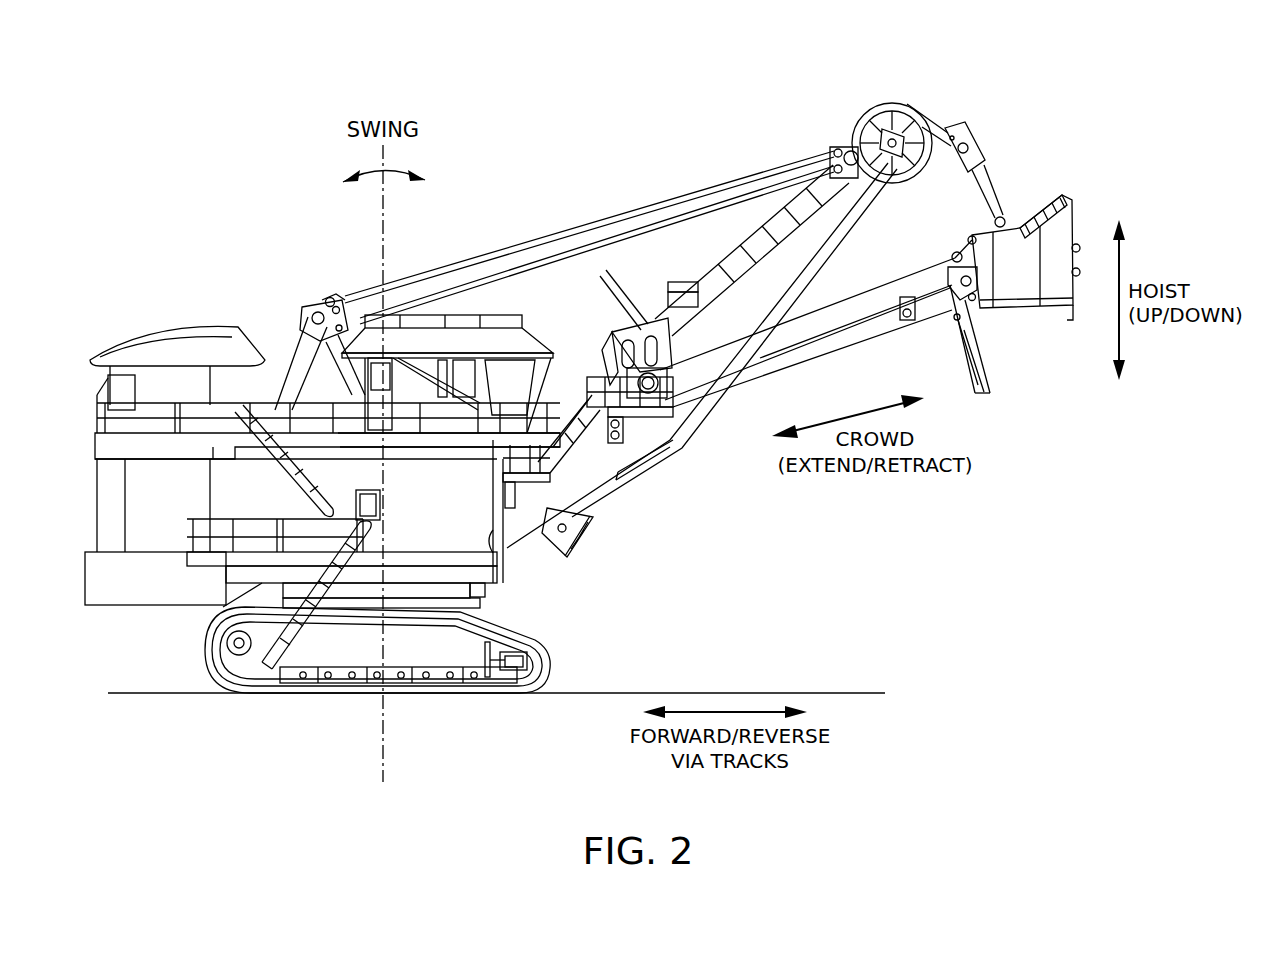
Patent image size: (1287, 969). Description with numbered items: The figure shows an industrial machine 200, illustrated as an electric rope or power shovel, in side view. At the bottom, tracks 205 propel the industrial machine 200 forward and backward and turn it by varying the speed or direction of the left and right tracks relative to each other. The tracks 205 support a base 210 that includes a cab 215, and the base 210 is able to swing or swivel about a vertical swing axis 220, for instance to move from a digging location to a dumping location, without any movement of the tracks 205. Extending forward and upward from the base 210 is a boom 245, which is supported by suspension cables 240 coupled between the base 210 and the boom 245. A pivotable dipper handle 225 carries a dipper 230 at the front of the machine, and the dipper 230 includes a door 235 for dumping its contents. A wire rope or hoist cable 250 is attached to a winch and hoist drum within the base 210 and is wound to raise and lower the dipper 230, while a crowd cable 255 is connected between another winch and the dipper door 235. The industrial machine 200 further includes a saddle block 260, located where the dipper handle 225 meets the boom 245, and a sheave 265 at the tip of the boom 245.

The industrial machine 200 is at (142, 203).
The tracks 205 is at (548, 656).
The base 210 is at (150, 530).
The cab 215 is at (500, 338).
The swing axis 220 is at (372, 732).
The dipper handle 225 is at (836, 293).
The dipper 230 is at (1020, 247).
The door 235 is at (985, 353).
The suspension cables 240 is at (523, 247).
The boom 245 is at (852, 190).
The hoist cable 250 is at (830, 133).
The crowd cable 255 is at (760, 373).
The saddle block 260 is at (615, 322).
The sheave 265 is at (913, 106).